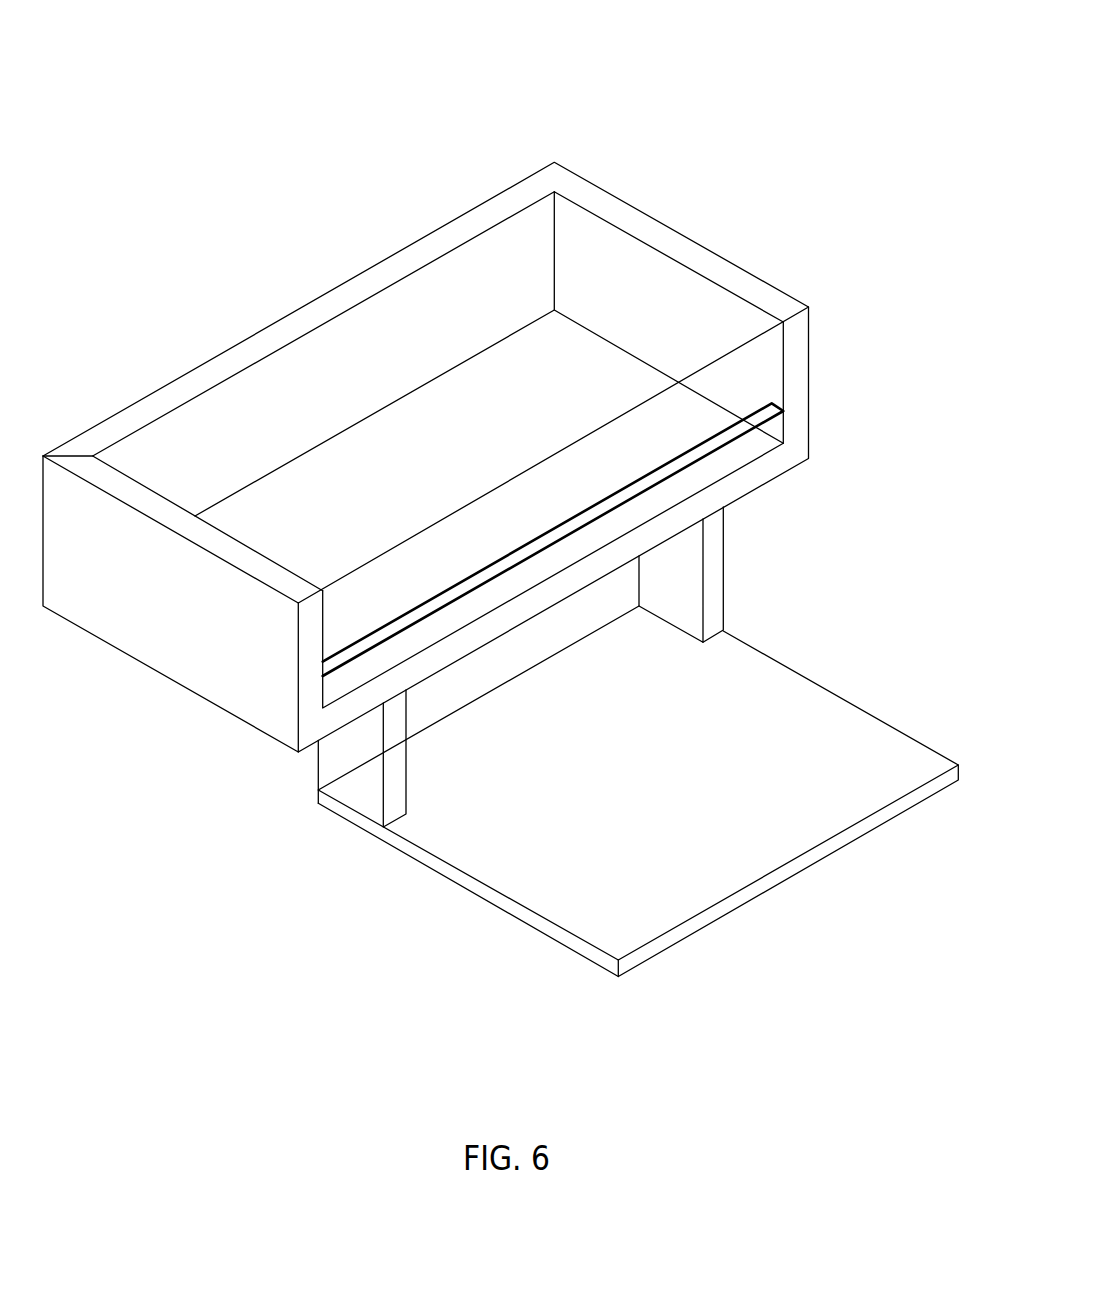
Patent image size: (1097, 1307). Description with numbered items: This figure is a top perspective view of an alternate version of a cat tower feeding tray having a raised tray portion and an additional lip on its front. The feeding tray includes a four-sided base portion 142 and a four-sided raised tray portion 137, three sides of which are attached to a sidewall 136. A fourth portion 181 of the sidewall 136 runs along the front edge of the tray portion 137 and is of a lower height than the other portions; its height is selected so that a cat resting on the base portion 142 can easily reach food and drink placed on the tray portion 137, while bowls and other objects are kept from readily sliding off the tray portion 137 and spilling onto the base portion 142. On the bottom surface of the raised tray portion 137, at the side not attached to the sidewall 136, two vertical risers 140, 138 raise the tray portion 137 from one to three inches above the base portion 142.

The sidewall 136 is at (375, 273).
The raised tray portion 137 is at (680, 417).
The fourth portion of sidewall 181 is at (783, 425).
The vertical riser 138 is at (722, 538).
The vertical riser 140 is at (325, 763).
The base portion 142 is at (473, 912).